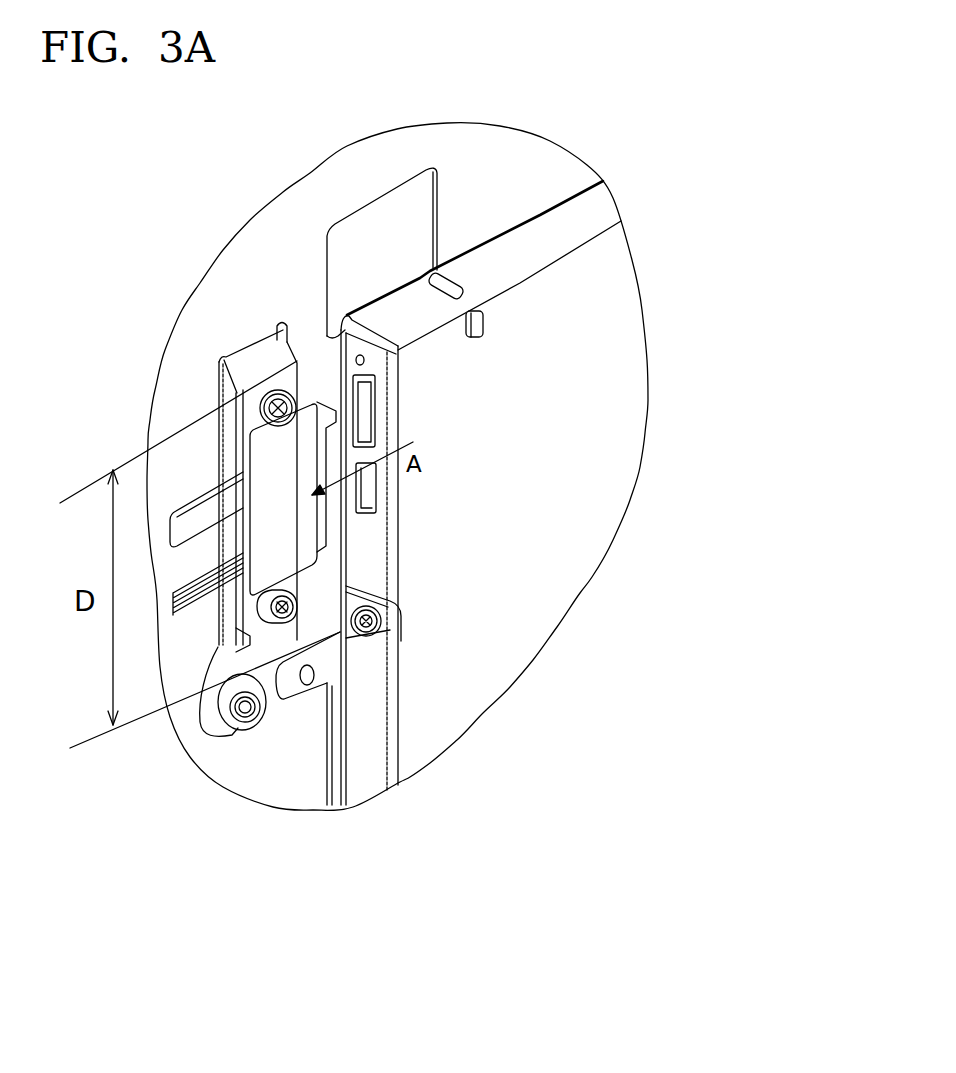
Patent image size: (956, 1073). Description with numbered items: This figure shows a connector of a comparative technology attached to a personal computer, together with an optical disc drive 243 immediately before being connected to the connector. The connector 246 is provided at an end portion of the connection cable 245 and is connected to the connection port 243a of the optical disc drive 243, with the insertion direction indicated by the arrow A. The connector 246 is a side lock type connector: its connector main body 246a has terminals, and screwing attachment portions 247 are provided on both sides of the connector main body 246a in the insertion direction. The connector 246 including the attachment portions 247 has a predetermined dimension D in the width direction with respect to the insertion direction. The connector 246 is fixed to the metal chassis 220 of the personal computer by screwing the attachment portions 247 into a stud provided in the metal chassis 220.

The metal chassis 220 is at (537, 187).
The optical disc drive 243 is at (580, 292).
The connection port 243a is at (373, 423).
The connection cable 245 is at (170, 520).
The connector 246 is at (210, 893).
The connector main body 246a is at (232, 733).
The screwing attachment portion 247 is at (260, 387).